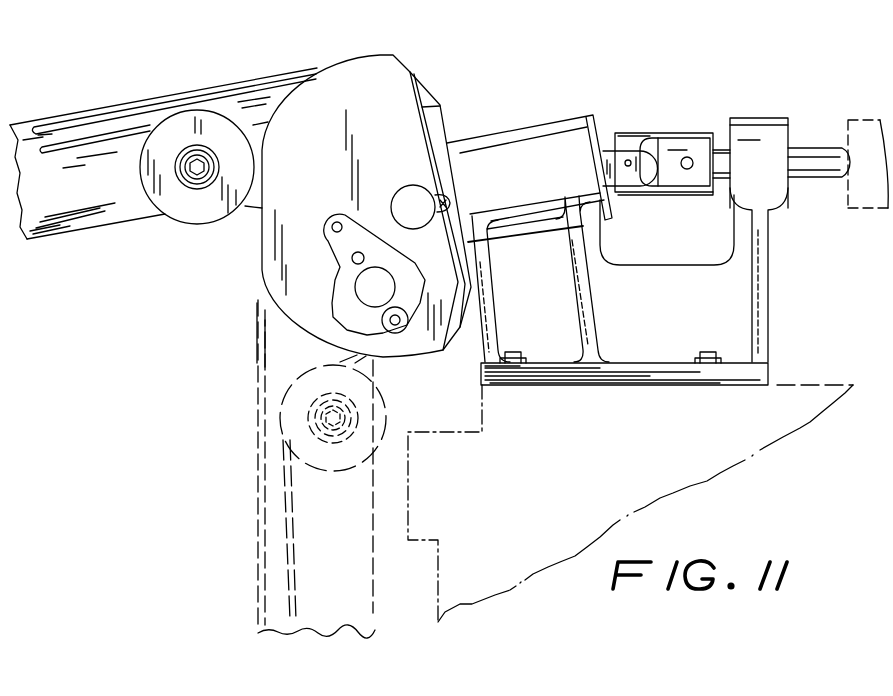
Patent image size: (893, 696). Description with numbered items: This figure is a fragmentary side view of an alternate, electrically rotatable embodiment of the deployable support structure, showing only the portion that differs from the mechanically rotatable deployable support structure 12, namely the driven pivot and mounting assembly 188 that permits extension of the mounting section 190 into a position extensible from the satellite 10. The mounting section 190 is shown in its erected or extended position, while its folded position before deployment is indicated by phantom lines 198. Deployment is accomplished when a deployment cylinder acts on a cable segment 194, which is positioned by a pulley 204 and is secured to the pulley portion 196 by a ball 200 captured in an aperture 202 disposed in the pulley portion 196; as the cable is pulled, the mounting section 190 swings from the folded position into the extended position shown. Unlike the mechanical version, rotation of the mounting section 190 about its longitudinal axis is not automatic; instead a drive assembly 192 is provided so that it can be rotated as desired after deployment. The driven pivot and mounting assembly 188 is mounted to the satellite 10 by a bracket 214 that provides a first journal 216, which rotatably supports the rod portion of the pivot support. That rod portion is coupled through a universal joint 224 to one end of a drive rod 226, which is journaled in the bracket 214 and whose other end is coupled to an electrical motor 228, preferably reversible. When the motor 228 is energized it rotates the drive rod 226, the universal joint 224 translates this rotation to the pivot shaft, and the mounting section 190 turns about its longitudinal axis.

The satellite 10 is at (737, 468).
The mechanically rotatable deployable support structure 12 is at (230, 168).
The driven pivot and mounting assembly 188 is at (487, 88).
The mounting section 190 is at (80, 223).
The drive assembly 192 is at (676, 117).
The cable segment 194 is at (262, 510).
The pulley portion 196 is at (383, 62).
The phantom lines 198 is at (377, 615).
The ball 200 is at (440, 191).
The aperture 202 is at (452, 205).
The pulley 204 is at (187, 210).
The bracket 214 is at (762, 357).
The first journal 216 is at (567, 179).
The universal joint 224 is at (697, 197).
The drive rod 226 is at (800, 152).
The electrical motor 228 is at (868, 112).